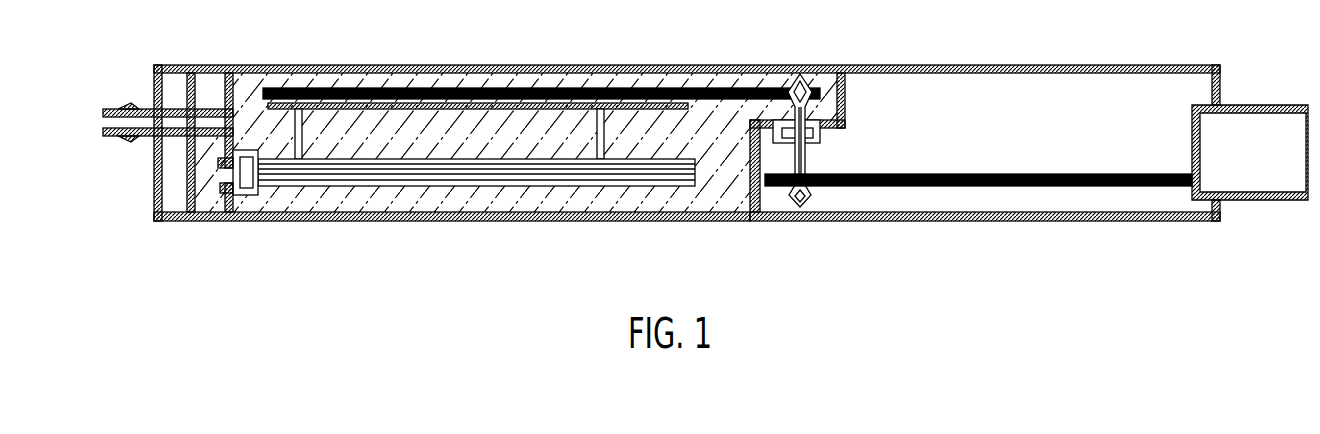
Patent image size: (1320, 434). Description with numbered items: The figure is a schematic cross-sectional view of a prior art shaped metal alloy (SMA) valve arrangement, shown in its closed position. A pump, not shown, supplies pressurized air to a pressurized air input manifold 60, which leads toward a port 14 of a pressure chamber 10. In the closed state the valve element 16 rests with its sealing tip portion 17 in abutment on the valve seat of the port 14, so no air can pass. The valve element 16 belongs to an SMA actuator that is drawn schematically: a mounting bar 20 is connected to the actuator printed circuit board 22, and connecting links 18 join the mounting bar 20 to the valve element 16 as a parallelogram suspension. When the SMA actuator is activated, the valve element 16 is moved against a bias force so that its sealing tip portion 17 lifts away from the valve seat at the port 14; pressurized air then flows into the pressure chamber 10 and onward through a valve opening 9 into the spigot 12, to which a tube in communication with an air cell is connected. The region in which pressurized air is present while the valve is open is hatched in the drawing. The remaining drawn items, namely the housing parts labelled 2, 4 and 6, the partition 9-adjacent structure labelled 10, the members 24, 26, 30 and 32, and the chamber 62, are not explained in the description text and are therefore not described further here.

The housing 2 is at (443, 222).
The upper housing wall 4 is at (403, 65).
The lower housing part 6 is at (1000, 223).
The valve opening 9 is at (235, 99).
The pressure chamber 10 is at (727, 222).
The spigot 12 is at (110, 107).
The port 14 is at (222, 190).
The valve element 16 is at (288, 186).
The sealing tip portion 17 is at (250, 197).
The connecting links 18 is at (310, 138).
The mounting bar 20 is at (311, 103).
The actuator printed circuit board 22 is at (714, 87).
The contact element 24 is at (807, 160).
The seal 26 is at (821, 138).
The circuit board 30 is at (1043, 173).
The connector 32 is at (1281, 105).
The pressurized air input manifold 60 is at (222, 176).
The chamber 62 is at (157, 185).